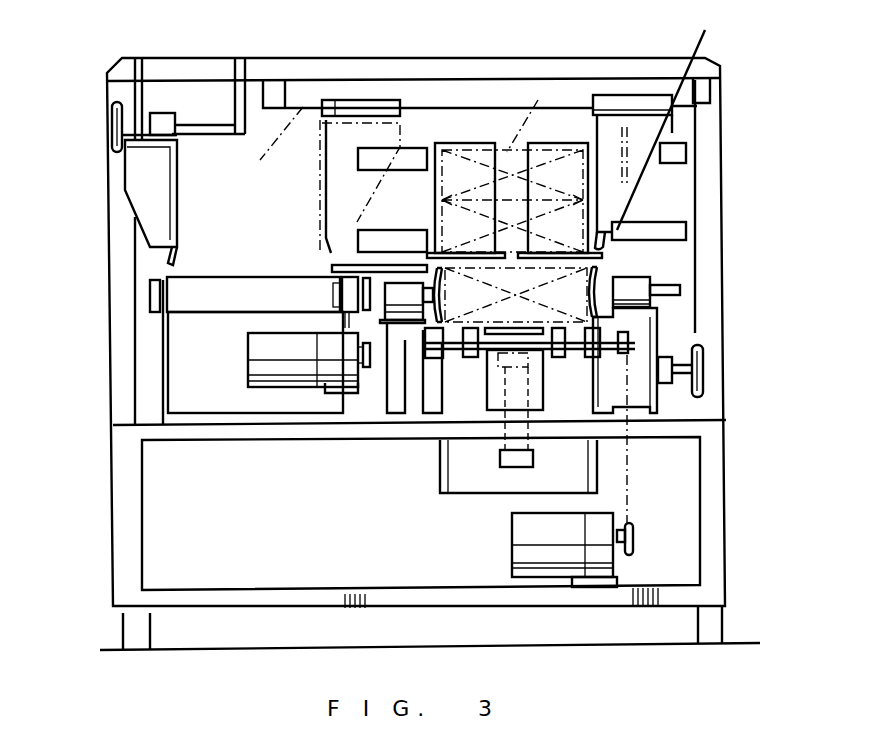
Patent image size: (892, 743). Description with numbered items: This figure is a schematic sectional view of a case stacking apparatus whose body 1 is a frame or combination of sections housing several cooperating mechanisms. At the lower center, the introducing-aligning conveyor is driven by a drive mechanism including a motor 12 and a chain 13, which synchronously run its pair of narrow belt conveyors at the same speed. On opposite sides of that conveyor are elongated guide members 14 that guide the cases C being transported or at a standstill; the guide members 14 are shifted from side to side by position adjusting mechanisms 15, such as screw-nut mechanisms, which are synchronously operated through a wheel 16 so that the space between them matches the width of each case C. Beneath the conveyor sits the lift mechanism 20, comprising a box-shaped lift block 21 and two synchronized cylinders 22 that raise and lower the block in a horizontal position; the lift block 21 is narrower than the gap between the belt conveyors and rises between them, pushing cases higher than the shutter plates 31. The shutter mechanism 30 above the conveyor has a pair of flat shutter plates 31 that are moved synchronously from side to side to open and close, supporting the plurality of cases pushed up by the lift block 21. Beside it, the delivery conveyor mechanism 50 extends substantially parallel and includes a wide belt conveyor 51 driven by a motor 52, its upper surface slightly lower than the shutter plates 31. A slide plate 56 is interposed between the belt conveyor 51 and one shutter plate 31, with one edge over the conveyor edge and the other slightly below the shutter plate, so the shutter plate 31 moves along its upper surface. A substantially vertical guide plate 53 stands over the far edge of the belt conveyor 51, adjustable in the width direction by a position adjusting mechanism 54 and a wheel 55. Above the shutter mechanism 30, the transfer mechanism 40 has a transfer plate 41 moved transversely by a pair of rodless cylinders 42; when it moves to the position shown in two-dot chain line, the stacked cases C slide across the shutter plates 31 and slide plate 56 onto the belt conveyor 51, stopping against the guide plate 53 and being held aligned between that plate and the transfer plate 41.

The body 1 is at (733, 522).
The motor 12 is at (530, 550).
The chain 13 is at (627, 523).
The guide member 14 is at (438, 308).
The position adjusting mechanism 15 is at (390, 325).
The wheel 16 is at (705, 375).
The lift mechanism 20 is at (470, 402).
The lift block 21 is at (483, 372).
The cylinder 22 is at (488, 480).
The shutter mechanism 30 is at (468, 125).
The shutter plate 31 is at (447, 253).
The transfer mechanism 40 is at (688, 128).
The transfer plate 41 is at (335, 120).
The rodless cylinder 42 is at (605, 95).
The delivery conveyor mechanism 50 is at (152, 326).
The belt conveyor 51 is at (214, 293).
The motor 52 is at (262, 372).
The guide plate 53 is at (170, 204).
The position adjusting mechanism 54 is at (163, 118).
The wheel 55 is at (115, 141).
The slide plate 56 is at (352, 262).
The case C is at (303, 107).